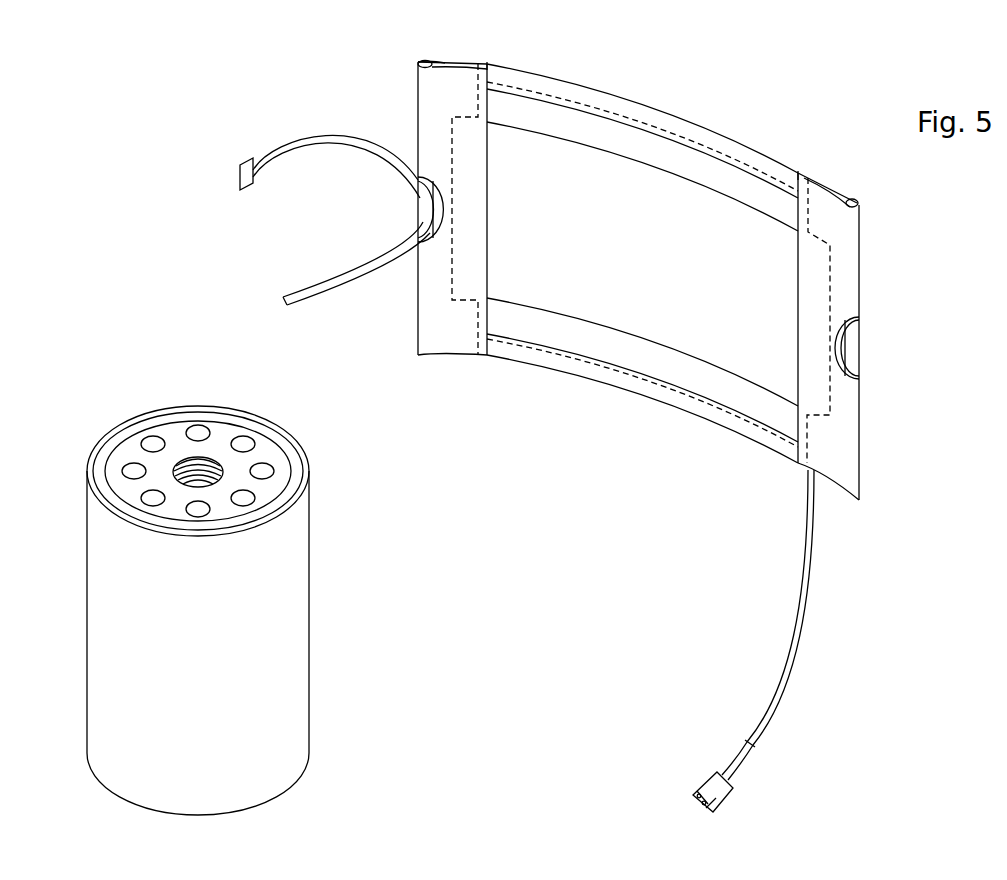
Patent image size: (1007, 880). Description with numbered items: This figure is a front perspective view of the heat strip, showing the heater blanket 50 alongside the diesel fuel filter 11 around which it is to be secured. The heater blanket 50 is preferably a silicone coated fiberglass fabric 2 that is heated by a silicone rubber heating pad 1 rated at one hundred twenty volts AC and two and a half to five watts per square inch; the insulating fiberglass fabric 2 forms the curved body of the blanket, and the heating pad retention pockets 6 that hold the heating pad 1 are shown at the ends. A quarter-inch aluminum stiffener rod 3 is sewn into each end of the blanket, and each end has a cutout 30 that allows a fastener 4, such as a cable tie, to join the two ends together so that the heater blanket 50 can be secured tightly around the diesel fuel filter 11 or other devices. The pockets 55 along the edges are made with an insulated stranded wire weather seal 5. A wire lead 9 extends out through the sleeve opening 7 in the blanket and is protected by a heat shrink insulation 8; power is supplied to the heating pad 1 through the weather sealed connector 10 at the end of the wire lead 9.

The silicone rubber heating pad 1 is at (713, 335).
The silicone coated fiberglass fabric 2 is at (563, 335).
The heater blanket 50 is at (638, 297).
The insulated stranded wire weather seal 5 is at (488, 65).
The pockets 55 is at (455, 60).
The heating pad retention pockets 6 is at (468, 142).
The sleeve opening 7 is at (813, 420).
The aluminum stiffener rod 3 is at (424, 204).
The cutout 30 is at (850, 338).
The fastener 4 is at (365, 270).
The heat shrink insulation 8 is at (770, 702).
The wire lead 9 is at (747, 762).
The weather sealed connector 10 is at (713, 797).
The diesel fuel filter 11 is at (287, 610).